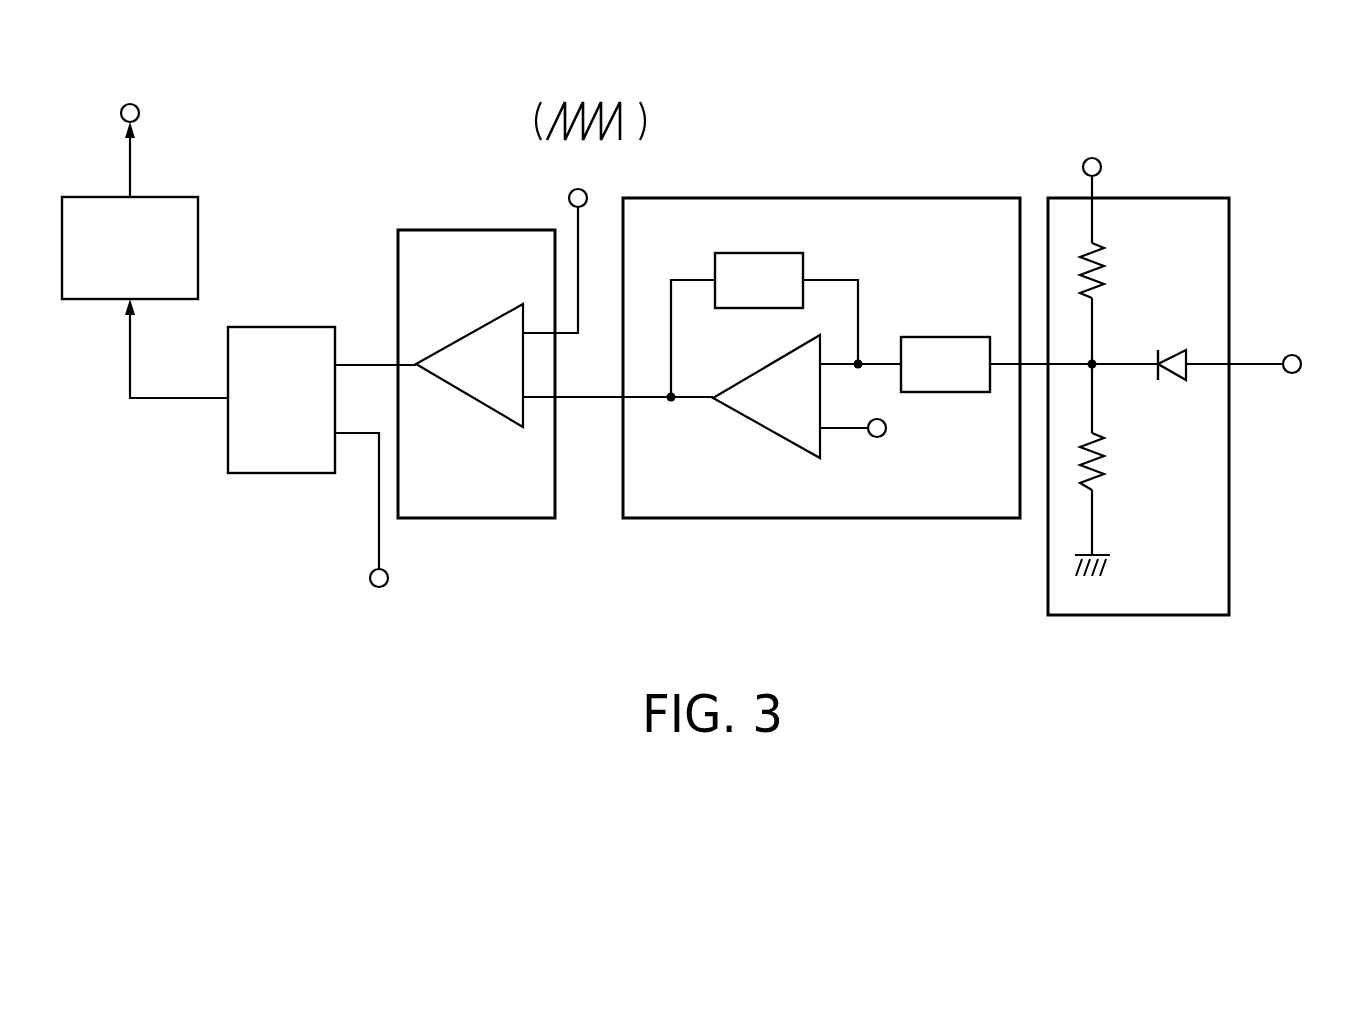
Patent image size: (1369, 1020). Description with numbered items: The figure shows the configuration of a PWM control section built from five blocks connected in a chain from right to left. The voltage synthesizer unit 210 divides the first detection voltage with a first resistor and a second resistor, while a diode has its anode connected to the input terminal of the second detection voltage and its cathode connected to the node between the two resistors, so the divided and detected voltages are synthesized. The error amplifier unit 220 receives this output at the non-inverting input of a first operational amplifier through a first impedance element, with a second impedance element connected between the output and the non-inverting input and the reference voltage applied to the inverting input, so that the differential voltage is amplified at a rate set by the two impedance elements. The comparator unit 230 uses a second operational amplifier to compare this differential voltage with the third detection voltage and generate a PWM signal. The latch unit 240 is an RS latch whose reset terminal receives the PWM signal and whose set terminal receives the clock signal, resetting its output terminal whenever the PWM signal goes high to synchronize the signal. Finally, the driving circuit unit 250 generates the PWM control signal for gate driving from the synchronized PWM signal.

The voltage synthesizer unit 210 is at (1143, 198).
The error amplifier unit 220 is at (800, 198).
The comparator unit 230 is at (423, 229).
The latch unit 240 is at (278, 327).
The driving circuit unit 250 is at (198, 229).